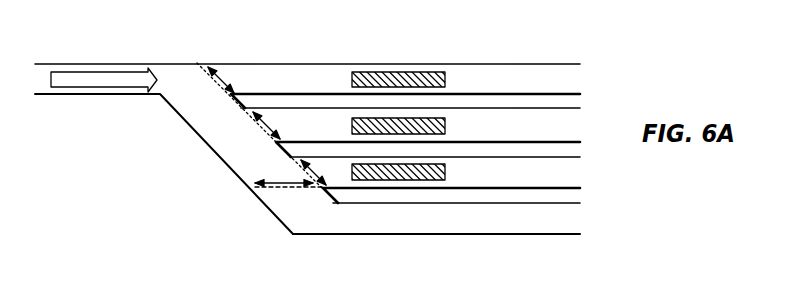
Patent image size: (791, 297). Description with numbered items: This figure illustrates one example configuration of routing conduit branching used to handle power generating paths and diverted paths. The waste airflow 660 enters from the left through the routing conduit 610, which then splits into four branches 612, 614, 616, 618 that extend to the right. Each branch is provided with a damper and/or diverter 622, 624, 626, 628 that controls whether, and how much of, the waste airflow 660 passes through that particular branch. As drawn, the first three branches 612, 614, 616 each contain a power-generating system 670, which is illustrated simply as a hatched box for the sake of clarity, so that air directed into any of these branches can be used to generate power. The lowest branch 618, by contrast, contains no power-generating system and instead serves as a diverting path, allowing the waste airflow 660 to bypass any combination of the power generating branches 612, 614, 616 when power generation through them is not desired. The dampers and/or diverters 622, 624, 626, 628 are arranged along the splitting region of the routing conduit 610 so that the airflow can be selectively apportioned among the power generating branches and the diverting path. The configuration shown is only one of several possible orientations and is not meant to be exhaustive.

The routing conduit 610 is at (170, 63).
The branch 612 is at (238, 63).
The branch 614 is at (303, 124).
The branch 616 is at (470, 178).
The branch 618 is at (531, 227).
The damper and/or diverter 622 is at (213, 80).
The damper and/or diverter 624 is at (259, 124).
The damper and/or diverter 626 is at (313, 167).
The damper and/or diverter 628 is at (297, 191).
The waste airflow 660 is at (70, 83).
The power-generating system 670 is at (392, 80).